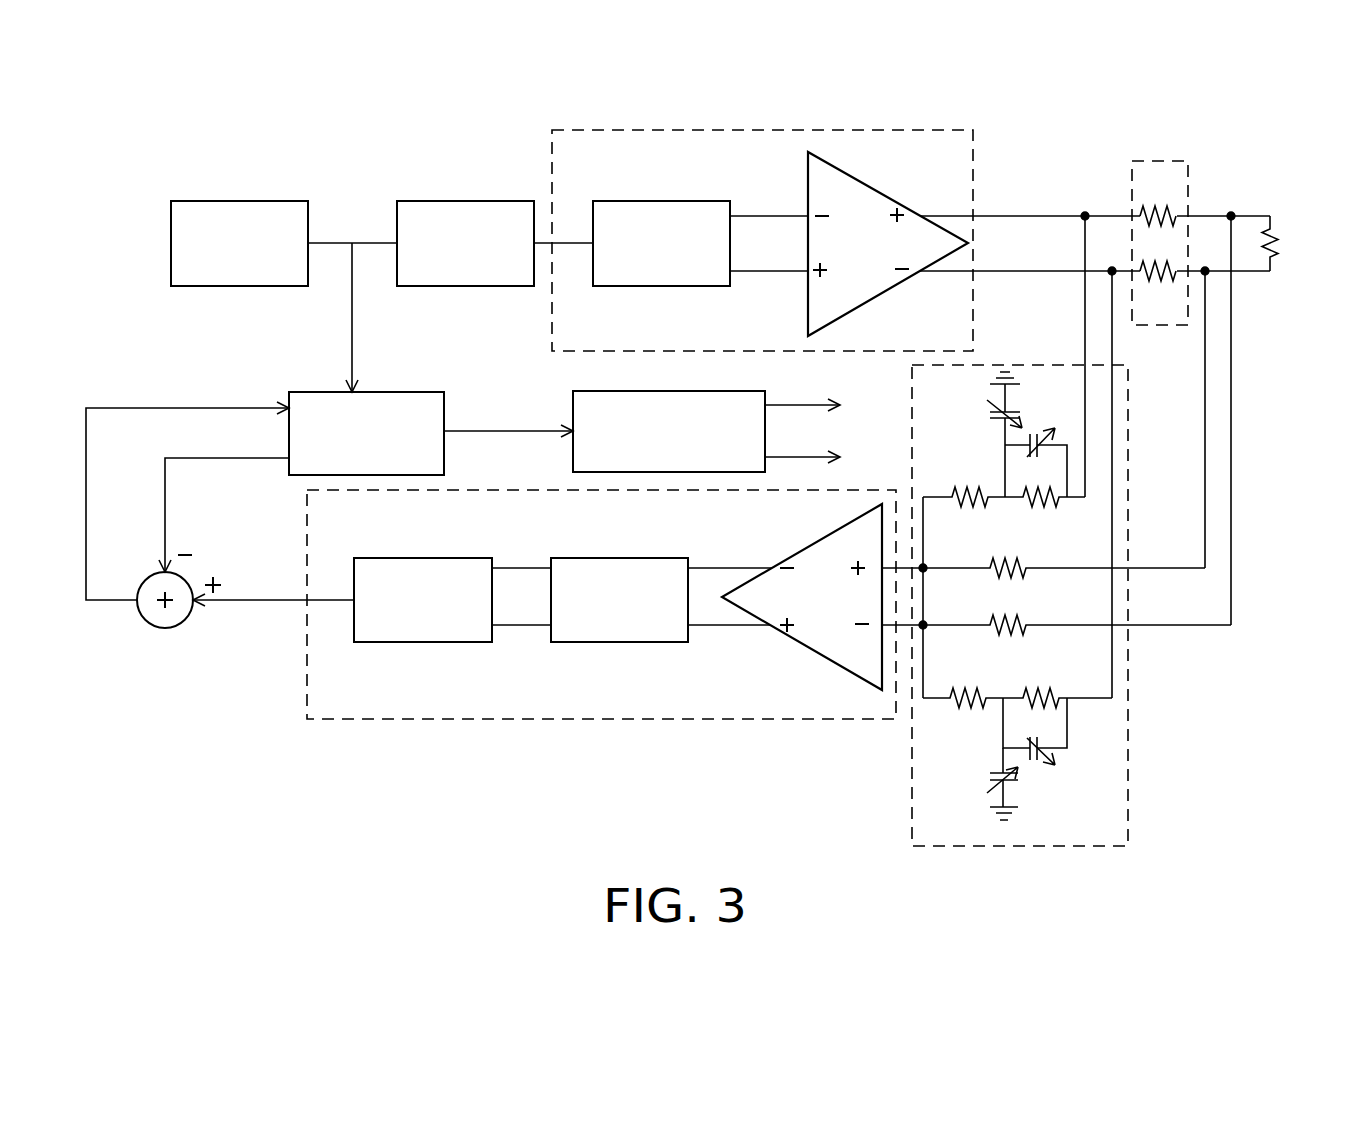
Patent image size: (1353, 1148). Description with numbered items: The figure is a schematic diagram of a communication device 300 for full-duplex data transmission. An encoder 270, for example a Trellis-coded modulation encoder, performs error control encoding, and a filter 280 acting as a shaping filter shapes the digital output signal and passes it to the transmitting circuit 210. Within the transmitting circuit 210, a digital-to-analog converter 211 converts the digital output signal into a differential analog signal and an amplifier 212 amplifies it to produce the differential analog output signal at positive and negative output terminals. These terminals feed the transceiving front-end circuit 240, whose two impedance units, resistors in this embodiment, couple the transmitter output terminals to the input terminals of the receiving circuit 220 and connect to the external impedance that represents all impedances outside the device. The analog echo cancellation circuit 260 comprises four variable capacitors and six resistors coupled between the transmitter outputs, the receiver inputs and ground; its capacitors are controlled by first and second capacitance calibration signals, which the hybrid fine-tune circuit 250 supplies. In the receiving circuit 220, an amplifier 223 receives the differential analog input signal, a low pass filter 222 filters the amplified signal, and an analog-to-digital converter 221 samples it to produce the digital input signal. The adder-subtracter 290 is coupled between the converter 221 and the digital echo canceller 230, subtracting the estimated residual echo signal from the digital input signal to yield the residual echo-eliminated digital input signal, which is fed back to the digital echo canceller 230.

The communication device 300 is at (1273, 882).
The transmitting circuit 210 is at (775, 128).
The digital-to-analog converter (DAC) 211 is at (637, 201).
The amplifier 212 is at (860, 175).
The receiving circuit 220 is at (555, 719).
The analog-to-digital converter (ADC) 221 is at (412, 642).
The filter 222 is at (565, 642).
The amplifier 223 is at (813, 652).
The digital echo canceller 230 is at (407, 392).
The transceiving front-end circuit 240 is at (1160, 160).
The hybrid fine-tune circuit 250 is at (628, 391).
The analog echo cancellation circuit 260 is at (1128, 772).
The encoder 270 is at (240, 201).
The filter 280 is at (466, 201).
The adder-subtracter 290 is at (167, 628).